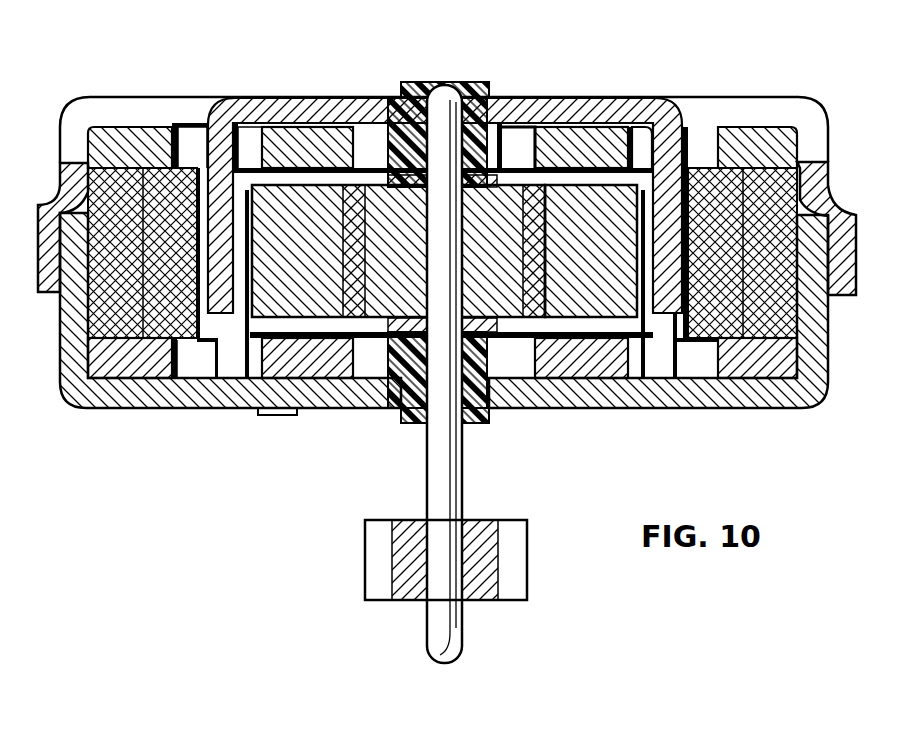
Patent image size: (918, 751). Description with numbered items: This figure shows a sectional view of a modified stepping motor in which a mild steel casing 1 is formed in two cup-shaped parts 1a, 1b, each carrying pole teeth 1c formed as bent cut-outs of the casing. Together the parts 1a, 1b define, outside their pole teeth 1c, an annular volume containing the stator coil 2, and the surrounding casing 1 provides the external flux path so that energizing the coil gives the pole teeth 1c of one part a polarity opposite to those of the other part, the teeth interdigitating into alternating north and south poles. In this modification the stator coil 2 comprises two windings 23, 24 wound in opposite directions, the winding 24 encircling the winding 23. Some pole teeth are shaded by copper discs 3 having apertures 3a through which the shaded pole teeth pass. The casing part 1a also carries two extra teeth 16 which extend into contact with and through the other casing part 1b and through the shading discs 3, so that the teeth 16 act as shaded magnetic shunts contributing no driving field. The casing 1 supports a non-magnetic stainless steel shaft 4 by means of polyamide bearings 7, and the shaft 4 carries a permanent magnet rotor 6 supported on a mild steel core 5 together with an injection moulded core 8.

The casing 1 is at (758, 107).
The casing part 1a is at (822, 205).
The casing part 1b is at (815, 352).
The pole teeth 1c is at (207, 150).
The stator coil 2 is at (785, 308).
The copper discs 3 is at (143, 140).
The apertures 3a is at (243, 130).
The shaft 4 is at (453, 490).
The core 5 is at (345, 267).
The permanent magnet rotor 6 is at (573, 307).
The bearings 7 is at (467, 90).
The injection moulded core 8 is at (505, 180).
The extra teeth 16 is at (273, 415).
The winding 23 is at (177, 343).
The winding 24 is at (110, 302).